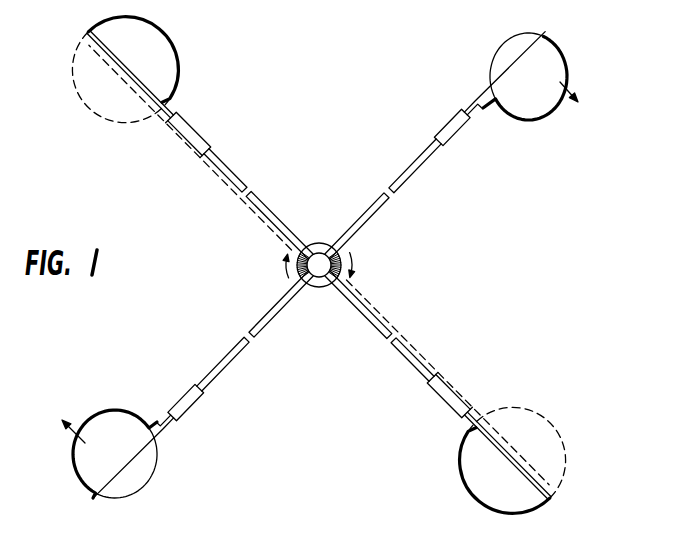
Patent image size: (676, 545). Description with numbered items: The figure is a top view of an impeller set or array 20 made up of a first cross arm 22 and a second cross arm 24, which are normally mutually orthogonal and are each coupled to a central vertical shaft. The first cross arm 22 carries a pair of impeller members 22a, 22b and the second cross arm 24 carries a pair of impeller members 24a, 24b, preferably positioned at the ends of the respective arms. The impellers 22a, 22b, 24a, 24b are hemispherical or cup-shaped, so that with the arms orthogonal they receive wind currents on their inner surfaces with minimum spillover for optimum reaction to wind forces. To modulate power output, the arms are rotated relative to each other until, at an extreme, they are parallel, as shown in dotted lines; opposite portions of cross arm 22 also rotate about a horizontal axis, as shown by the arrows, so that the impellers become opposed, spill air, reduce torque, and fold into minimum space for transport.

The impeller set 20 is at (503, 246).
The first cross arm 22 is at (418, 158).
The impeller member 22a is at (122, 432).
The impeller member 22b is at (517, 98).
The second cross arm 24 is at (370, 321).
The impeller member 24a is at (477, 477).
The impeller member 24b is at (150, 42).